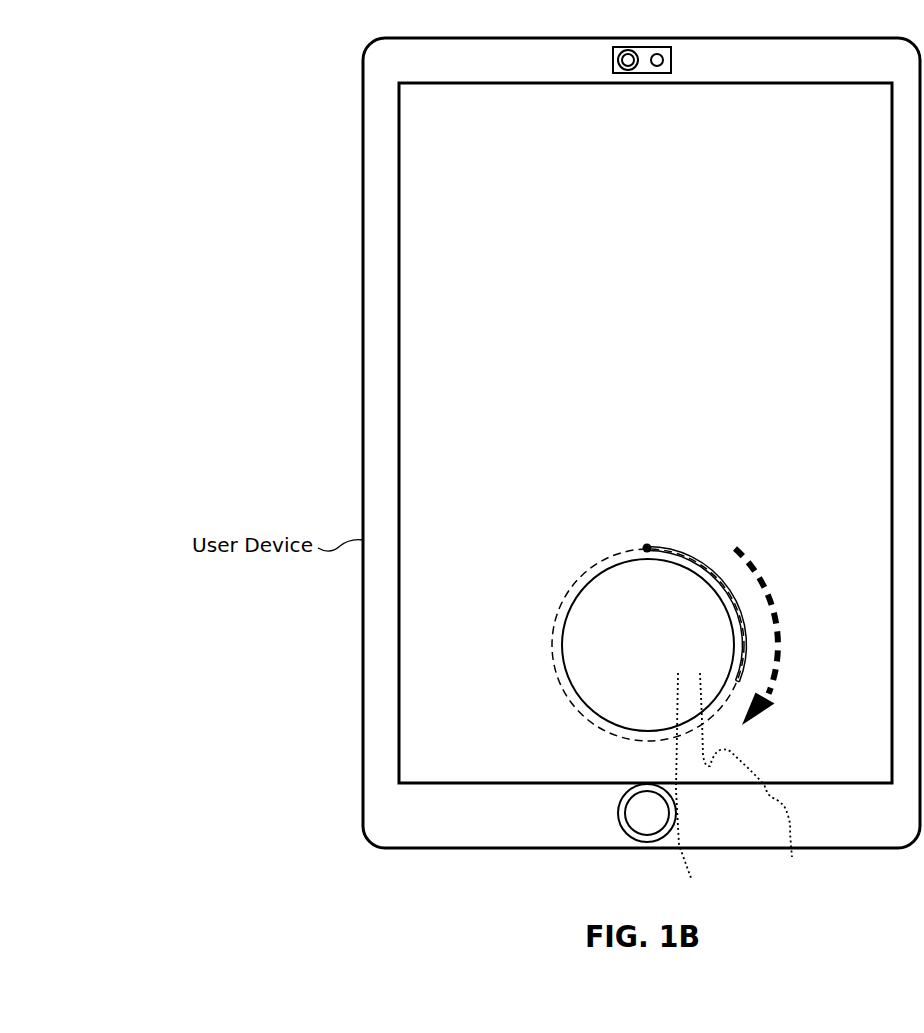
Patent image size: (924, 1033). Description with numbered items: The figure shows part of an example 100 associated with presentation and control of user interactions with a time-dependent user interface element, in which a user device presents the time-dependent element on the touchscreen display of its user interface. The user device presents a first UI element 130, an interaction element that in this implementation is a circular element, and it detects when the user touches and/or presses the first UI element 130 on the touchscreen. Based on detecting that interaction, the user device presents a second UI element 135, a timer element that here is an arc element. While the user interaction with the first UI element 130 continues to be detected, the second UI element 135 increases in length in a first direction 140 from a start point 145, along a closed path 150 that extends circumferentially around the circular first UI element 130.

The example 100 is at (152, 52).
The first UI element 130 is at (577, 700).
The second UI element 135 is at (697, 559).
The first direction 140 is at (779, 643).
The start point 145 is at (647, 547).
The closed path 150 is at (552, 645).